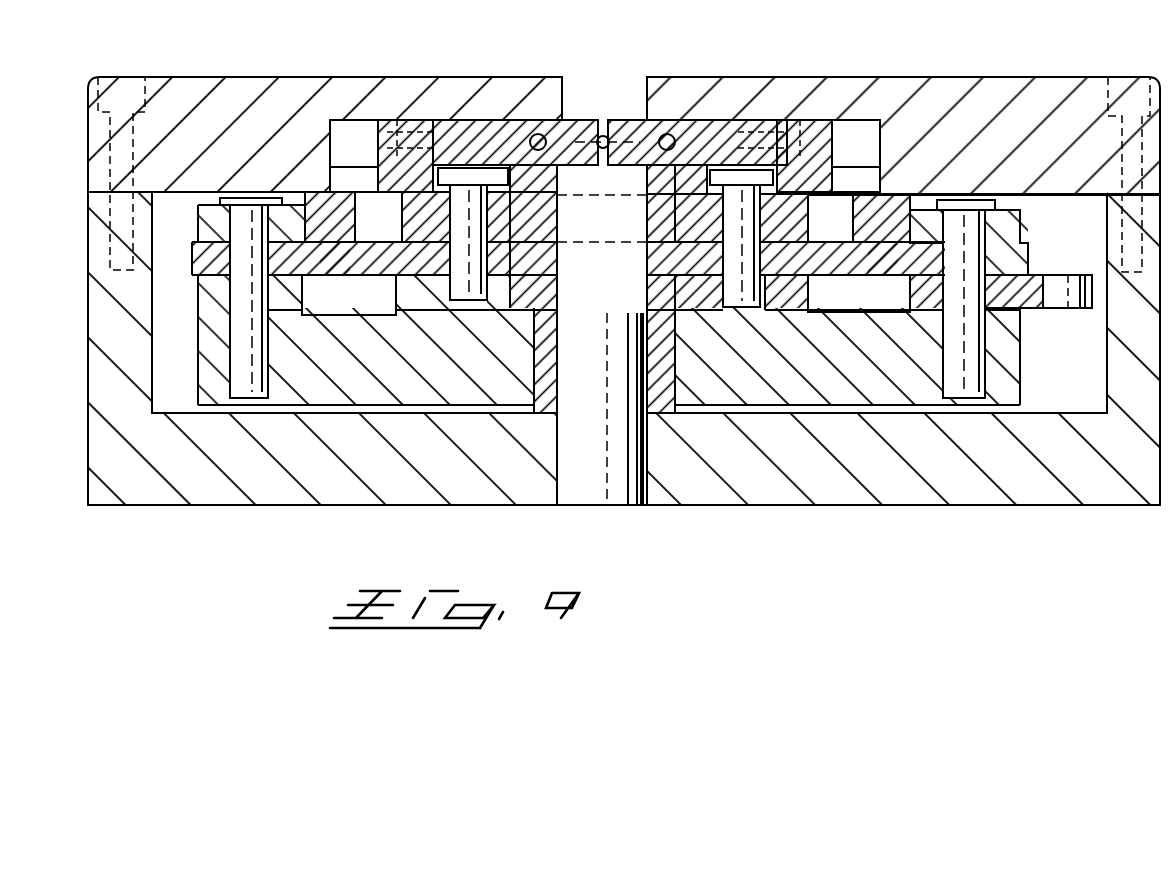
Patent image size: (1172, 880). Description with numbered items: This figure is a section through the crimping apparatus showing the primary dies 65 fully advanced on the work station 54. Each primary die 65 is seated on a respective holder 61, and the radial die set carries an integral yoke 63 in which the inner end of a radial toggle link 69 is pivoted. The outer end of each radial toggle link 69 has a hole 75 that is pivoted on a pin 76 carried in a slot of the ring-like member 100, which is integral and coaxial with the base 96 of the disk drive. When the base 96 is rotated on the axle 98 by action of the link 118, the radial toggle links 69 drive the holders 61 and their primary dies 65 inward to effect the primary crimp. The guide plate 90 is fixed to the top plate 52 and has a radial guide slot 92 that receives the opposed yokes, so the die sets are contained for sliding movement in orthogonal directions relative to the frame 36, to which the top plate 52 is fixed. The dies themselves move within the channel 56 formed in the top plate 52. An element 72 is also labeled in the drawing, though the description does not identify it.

The frame 36 is at (82, 287).
The top plate 52 is at (956, 77).
The work station 54 is at (596, 140).
The channel 56 is at (370, 153).
The holder 61 is at (399, 118).
The yoke 63 is at (806, 280).
The primary die 65 is at (605, 137).
The radial toggle link 69 is at (334, 268).
The spacer block 72 is at (765, 225).
The hole 75 is at (258, 197).
The pin 76 is at (968, 197).
The guide plate 90 is at (318, 194).
The radial guide slot 92 is at (378, 228).
The base 96 is at (777, 405).
The axle 98 is at (648, 458).
The ring-like member 100 is at (200, 222).
The link 118 is at (1030, 272).